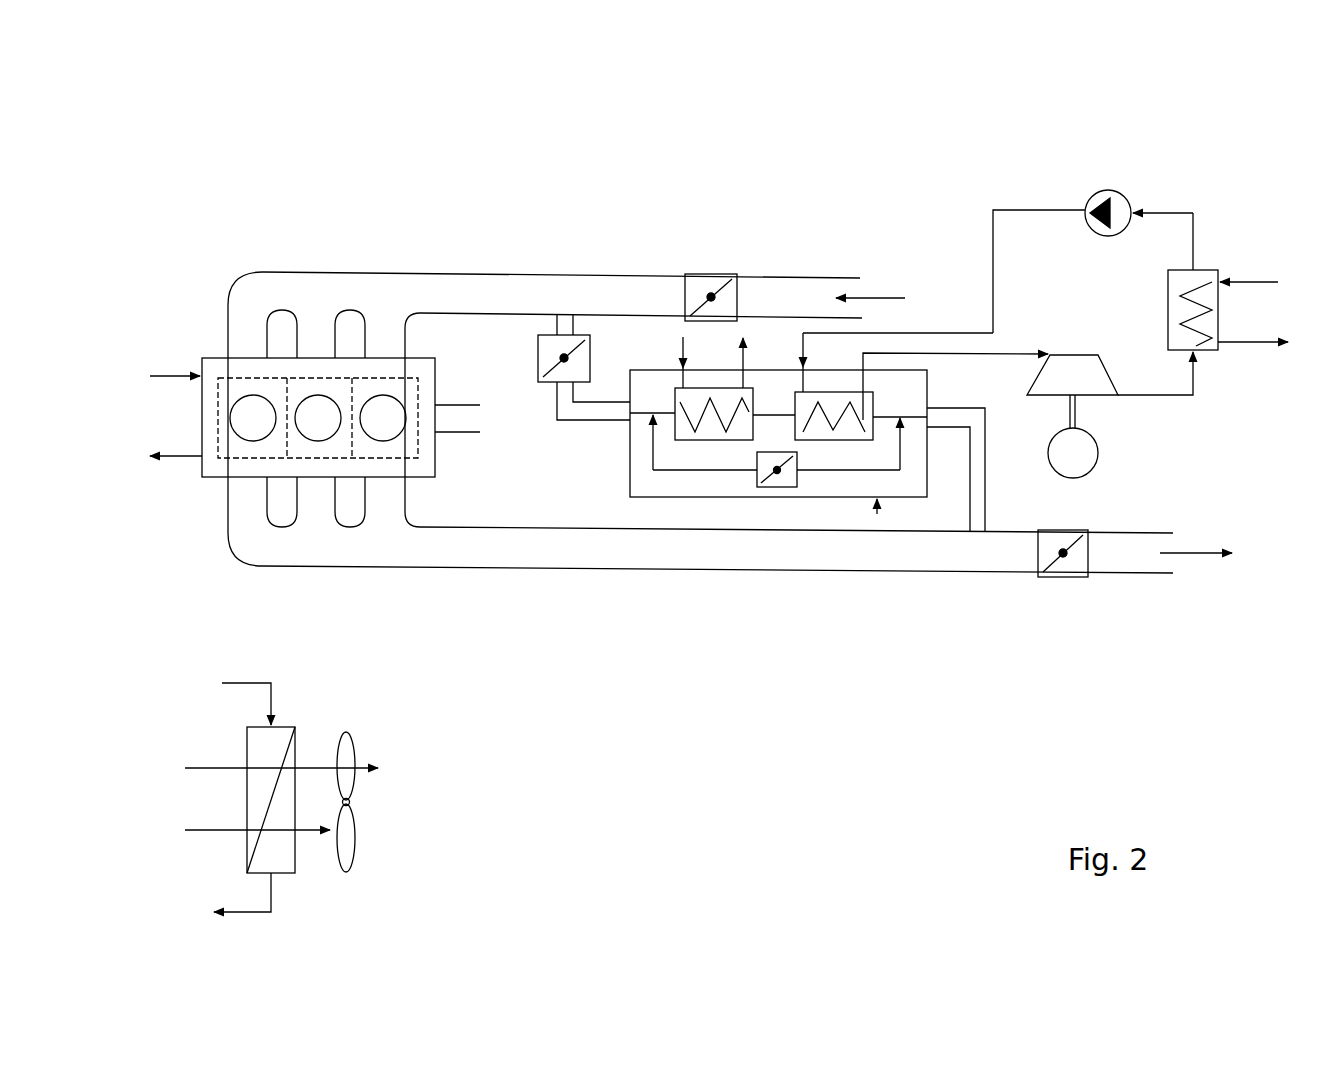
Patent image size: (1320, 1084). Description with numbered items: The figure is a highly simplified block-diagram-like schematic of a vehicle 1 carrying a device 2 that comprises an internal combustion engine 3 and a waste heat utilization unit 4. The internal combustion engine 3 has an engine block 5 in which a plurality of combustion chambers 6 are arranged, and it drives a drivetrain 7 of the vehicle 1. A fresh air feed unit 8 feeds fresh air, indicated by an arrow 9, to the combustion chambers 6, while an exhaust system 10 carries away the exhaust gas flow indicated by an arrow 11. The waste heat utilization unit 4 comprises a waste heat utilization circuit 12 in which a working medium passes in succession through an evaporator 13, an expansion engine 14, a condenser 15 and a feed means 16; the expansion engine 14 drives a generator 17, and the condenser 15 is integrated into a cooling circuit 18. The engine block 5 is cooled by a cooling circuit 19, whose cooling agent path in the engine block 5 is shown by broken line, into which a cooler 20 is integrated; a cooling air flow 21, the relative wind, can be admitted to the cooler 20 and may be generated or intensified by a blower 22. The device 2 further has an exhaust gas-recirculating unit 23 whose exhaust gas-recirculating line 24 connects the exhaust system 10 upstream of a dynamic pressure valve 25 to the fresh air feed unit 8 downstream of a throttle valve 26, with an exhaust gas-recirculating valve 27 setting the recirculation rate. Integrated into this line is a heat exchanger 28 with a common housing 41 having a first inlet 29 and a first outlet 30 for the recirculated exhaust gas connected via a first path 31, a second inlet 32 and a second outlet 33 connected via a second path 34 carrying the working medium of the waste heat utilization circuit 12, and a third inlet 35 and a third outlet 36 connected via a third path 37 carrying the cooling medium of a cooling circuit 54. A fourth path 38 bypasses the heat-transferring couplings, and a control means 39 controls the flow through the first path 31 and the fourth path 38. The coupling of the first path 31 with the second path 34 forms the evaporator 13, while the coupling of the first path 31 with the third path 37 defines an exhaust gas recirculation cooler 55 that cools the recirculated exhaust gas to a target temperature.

The vehicle 1 is at (230, 180).
The device 2 is at (598, 226).
The internal combustion engine 3 is at (195, 298).
The waste heat utilization unit 4 is at (1216, 217).
The engine block 5 is at (202, 413).
The combustion chambers 6 is at (246, 430).
The drivetrain 7 is at (482, 418).
The fresh air feed unit 8 is at (465, 270).
The fresh air flow arrow 9 is at (872, 296).
The exhaust system 10 is at (440, 568).
The exhaust gas flow arrow 11 is at (1192, 553).
The waste heat utilization circuit 12 is at (1036, 210).
The evaporator 13 is at (838, 445).
The expansion engine 14 is at (1072, 370).
The condenser 15 is at (1168, 310).
The feed means 16 is at (1105, 190).
The generator 17 is at (1100, 452).
The cooling circuit 18 is at (1255, 282).
The cooling circuit 19 is at (168, 372).
The cooler 20 is at (283, 727).
The cooling air flow 21 is at (193, 830).
The blower 22 is at (346, 863).
The exhaust gas-recirculating unit 23 is at (993, 497).
The exhaust gas-recirculating line 24 is at (967, 508).
The dynamic pressure valve 25 is at (1063, 577).
The throttle valve 26 is at (712, 272).
The exhaust gas-recirculating valve 27 is at (538, 355).
The heat exchanger 28 is at (877, 512).
The first inlet 29 is at (930, 417).
The first outlet 30 is at (630, 415).
The first path 31 is at (777, 413).
The second inlet 32 is at (808, 368).
The second outlet 33 is at (868, 372).
The second path 34 is at (840, 418).
The third inlet 35 is at (680, 368).
The third outlet 36 is at (740, 374).
The third path 37 is at (705, 415).
The fourth path 38 is at (900, 444).
The control means 39 is at (775, 488).
The common housing 41 is at (658, 500).
The cooling circuit 54 is at (681, 355).
The exhaust gas recirculation cooler 55 is at (712, 441).